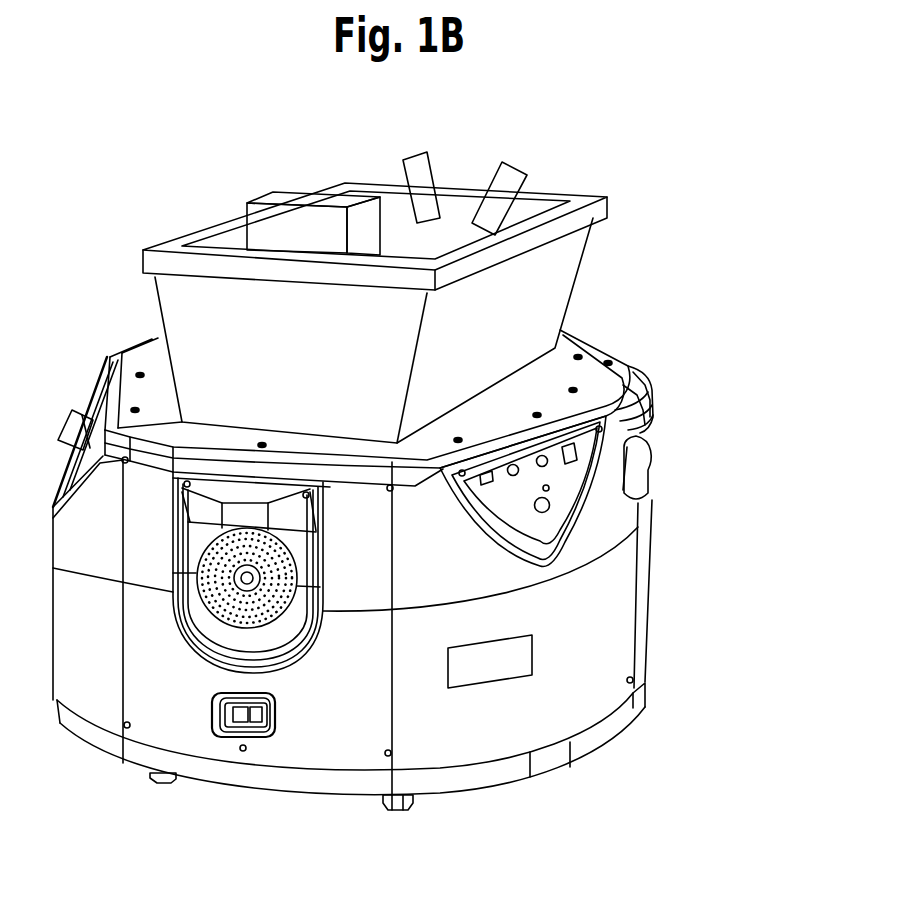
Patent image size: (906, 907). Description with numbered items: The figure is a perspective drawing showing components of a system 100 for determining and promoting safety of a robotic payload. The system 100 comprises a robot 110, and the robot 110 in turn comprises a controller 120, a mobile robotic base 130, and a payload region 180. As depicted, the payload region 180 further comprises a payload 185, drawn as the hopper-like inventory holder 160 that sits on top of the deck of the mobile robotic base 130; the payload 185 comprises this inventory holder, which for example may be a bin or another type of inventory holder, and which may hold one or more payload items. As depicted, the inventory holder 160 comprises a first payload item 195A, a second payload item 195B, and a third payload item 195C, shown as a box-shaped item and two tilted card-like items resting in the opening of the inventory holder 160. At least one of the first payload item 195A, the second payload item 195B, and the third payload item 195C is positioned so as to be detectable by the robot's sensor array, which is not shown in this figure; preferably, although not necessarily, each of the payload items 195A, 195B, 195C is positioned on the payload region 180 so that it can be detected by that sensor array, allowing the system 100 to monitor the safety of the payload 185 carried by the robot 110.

The system 100 is at (411, 505).
The robot 110 is at (355, 849).
The controller 120 is at (512, 678).
The mobile robotic base 130 is at (730, 540).
The inventory holder 160 is at (318, 351).
The payload region 180 is at (600, 382).
The payload 185 is at (455, 182).
The first payload item 195A is at (273, 193).
The second payload item 195B is at (417, 170).
The third payload item 195C is at (507, 175).